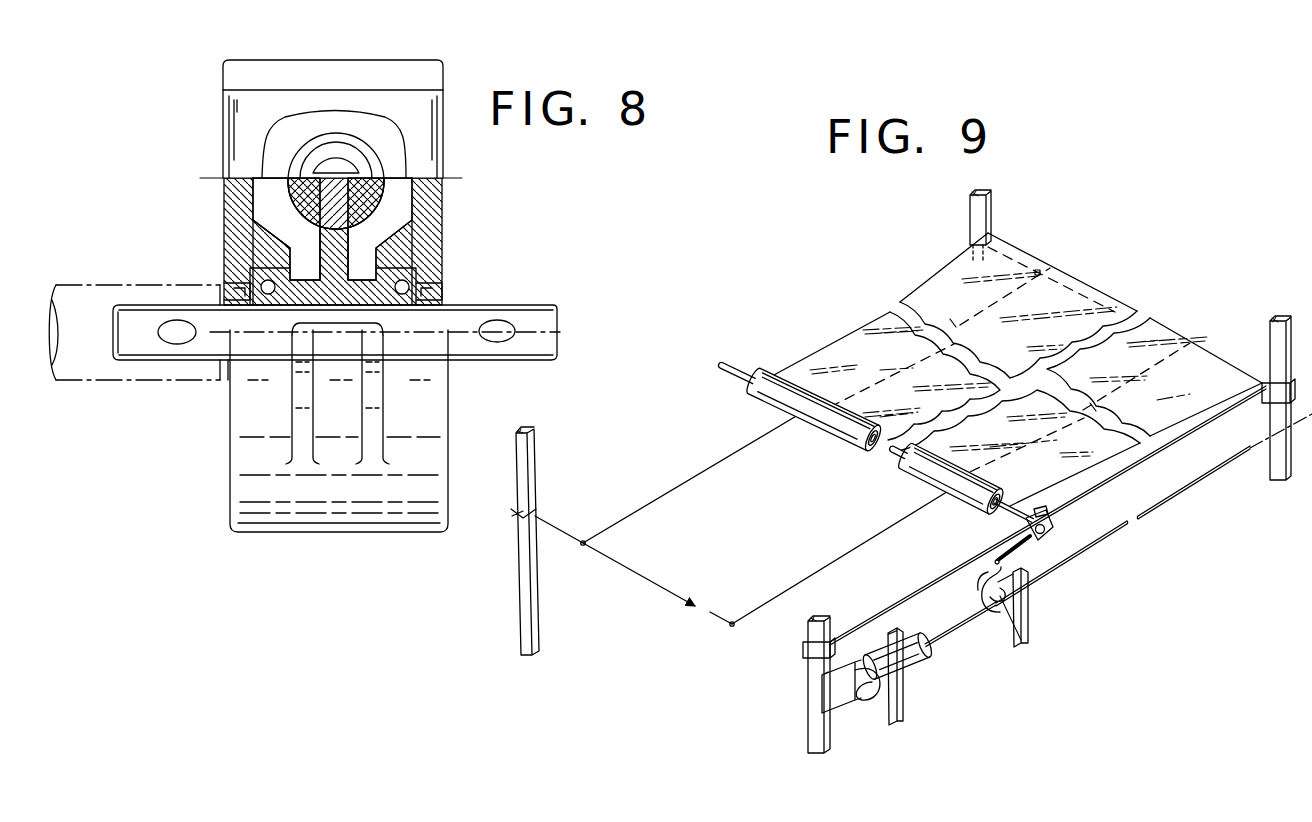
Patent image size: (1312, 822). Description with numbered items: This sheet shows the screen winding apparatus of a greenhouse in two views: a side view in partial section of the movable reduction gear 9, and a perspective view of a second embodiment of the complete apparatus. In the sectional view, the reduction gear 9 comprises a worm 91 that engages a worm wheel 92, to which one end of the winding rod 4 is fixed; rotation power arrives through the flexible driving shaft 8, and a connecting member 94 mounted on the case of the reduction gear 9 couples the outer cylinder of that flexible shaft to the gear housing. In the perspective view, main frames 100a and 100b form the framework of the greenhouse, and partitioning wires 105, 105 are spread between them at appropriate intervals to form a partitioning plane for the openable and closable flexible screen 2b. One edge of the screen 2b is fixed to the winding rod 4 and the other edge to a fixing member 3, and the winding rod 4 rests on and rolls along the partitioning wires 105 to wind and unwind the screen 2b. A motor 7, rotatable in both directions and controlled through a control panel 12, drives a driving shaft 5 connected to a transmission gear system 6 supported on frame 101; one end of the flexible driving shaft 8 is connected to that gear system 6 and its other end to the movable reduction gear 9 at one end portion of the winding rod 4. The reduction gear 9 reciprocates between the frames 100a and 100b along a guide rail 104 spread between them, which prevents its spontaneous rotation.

In FIG. 9, the openable and closable flexible screen 2b is at (830, 352).
In FIG. 9, the fixing member 3 is at (1262, 383).
In FIG. 8, the winding rod 4 is at (113, 286).
In FIG. 9, the winding rod 4 is at (737, 358).
In FIG. 9, the driving shaft 5 is at (960, 640).
In FIG. 9, the transmission gear system 6 is at (1000, 612).
In FIG. 9, the motor 7 is at (930, 672).
In FIG. 9, the flexible driving shaft 8 is at (1020, 548).
In FIG. 8, the movable reduction gear 9 is at (476, 215).
In FIG. 9, the movable reduction gear 9 is at (1050, 520).
In FIG. 9, the control panel 12 is at (832, 693).
In FIG. 8, the worm 91 is at (305, 197).
In FIG. 8, the worm wheel 92 is at (355, 228).
In FIG. 8, the connecting member 94 is at (324, 132).
In FIG. 9, the main frame 100a is at (533, 486).
In FIG. 9, the main frame 100b is at (988, 212).
In FIG. 9, the frame 101 is at (1028, 620).
In FIG. 9, the guide rail 104 is at (1172, 440).
In FIG. 9, the partitioning wires 105 is at (731, 458).